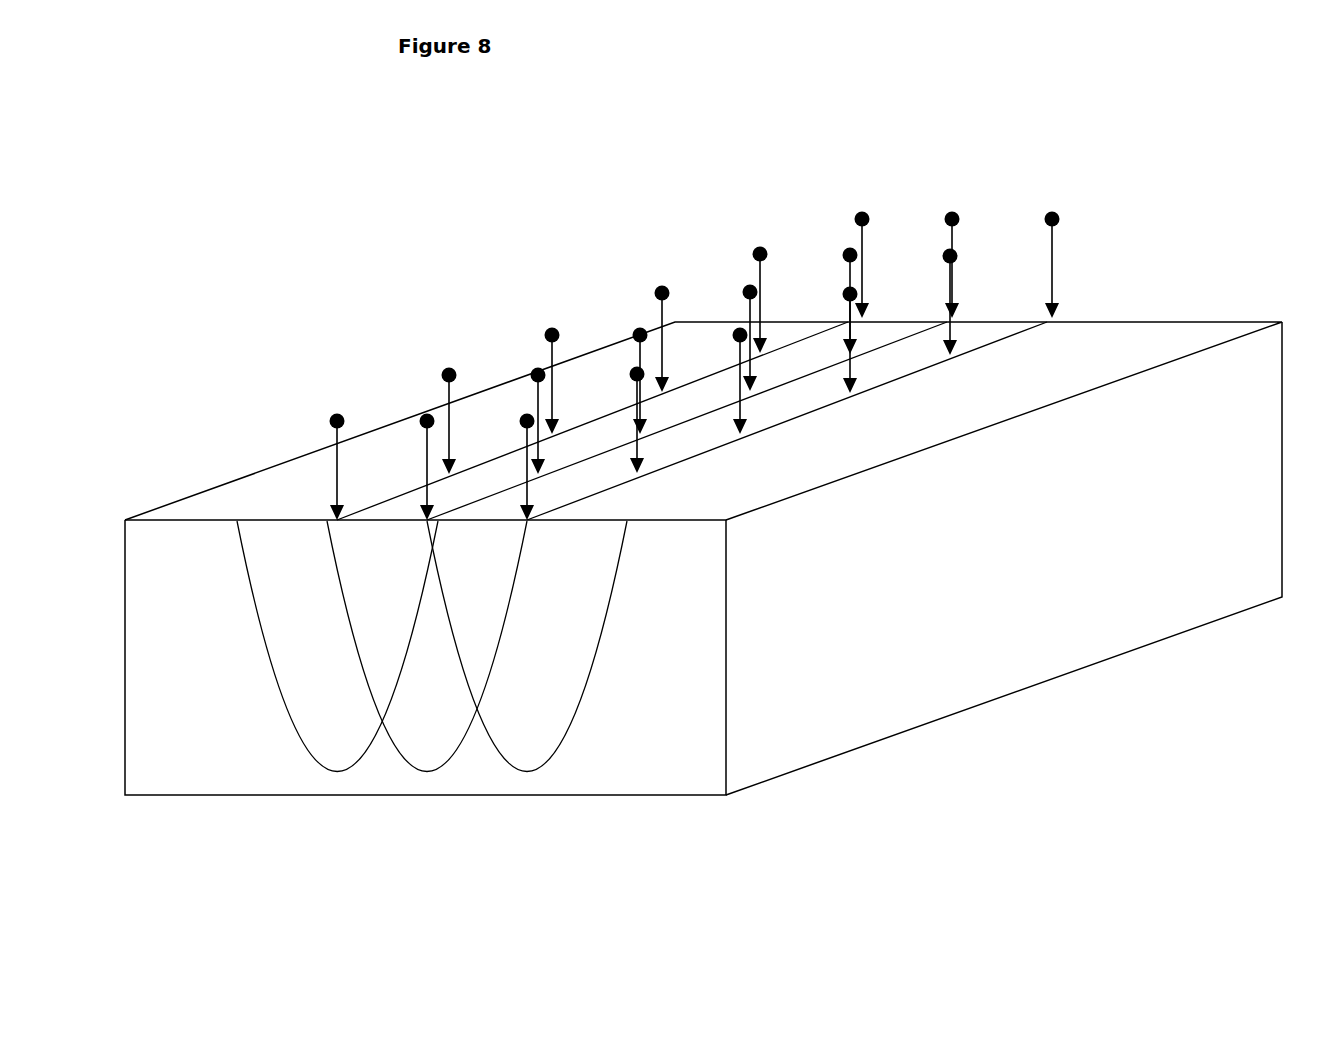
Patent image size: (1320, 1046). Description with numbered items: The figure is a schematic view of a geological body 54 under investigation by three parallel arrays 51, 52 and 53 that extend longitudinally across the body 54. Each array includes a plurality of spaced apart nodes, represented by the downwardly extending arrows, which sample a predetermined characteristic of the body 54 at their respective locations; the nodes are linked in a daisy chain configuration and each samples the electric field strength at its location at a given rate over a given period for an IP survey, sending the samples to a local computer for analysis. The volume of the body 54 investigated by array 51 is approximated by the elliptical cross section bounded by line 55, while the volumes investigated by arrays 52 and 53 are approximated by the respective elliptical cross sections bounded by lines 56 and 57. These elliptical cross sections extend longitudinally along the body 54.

The array 51 is at (804, 302).
The array 52 is at (665, 319).
The array 53 is at (707, 465).
The geological body 54 is at (692, 304).
The line 55 is at (420, 684).
The line 56 is at (299, 677).
The line 57 is at (527, 686).